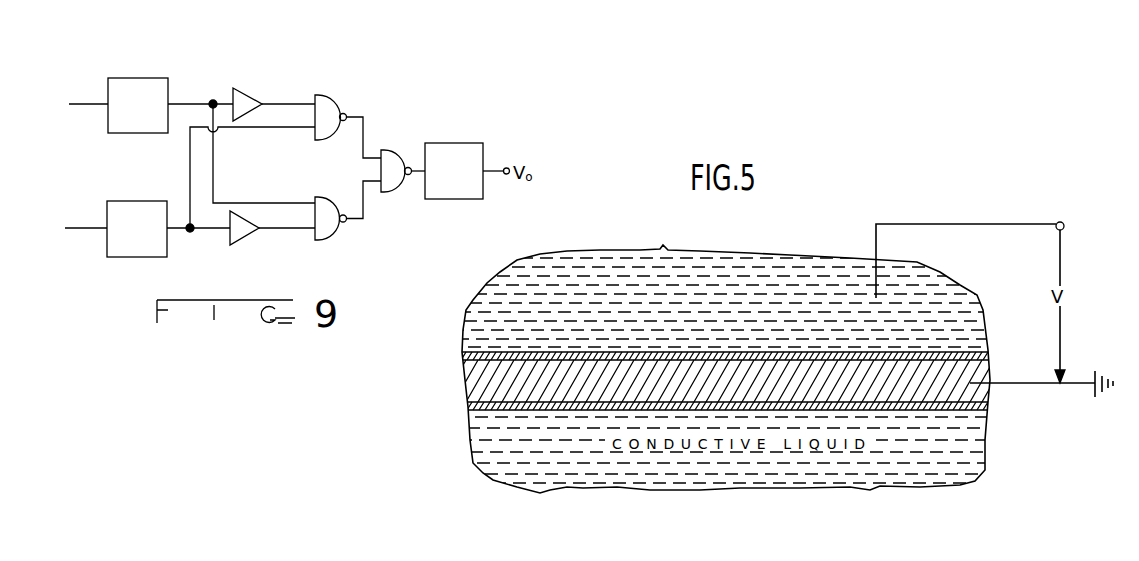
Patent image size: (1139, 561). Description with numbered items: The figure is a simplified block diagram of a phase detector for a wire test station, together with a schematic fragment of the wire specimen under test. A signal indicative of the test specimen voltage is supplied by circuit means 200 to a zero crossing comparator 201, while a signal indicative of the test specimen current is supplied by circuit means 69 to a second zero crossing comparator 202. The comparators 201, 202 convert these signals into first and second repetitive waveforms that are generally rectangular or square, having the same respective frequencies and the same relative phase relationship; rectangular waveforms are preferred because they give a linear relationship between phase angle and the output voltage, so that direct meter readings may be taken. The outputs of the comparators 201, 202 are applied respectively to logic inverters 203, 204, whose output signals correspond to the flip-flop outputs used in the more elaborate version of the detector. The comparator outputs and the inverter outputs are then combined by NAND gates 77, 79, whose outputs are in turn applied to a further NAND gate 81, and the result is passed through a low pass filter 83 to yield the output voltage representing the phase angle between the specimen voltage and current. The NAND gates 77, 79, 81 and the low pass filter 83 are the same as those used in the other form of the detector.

The circuit means 200 is at (85, 104).
The zero crossing comparator 201 is at (133, 78).
The circuit means 69 is at (80, 228).
The zero crossing comparator 202 is at (128, 201).
The logic inverter 203 is at (247, 88).
The logic inverter 204 is at (245, 240).
The NAND gate 77 is at (338, 96).
The NAND gate 79 is at (332, 237).
The NAND gate 81 is at (398, 190).
The low pass filter 83 is at (452, 143).